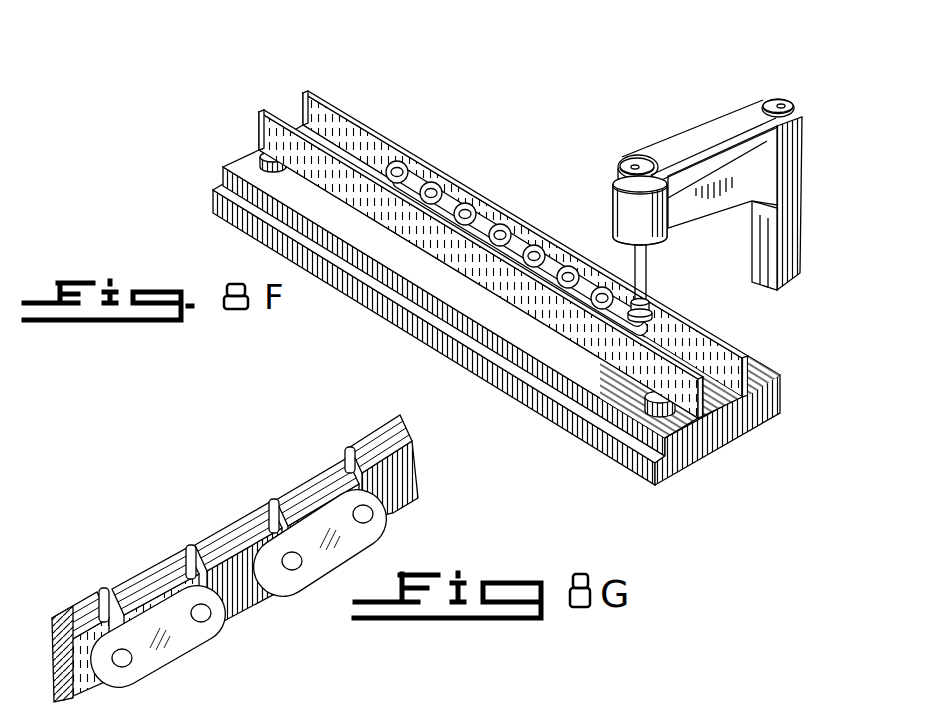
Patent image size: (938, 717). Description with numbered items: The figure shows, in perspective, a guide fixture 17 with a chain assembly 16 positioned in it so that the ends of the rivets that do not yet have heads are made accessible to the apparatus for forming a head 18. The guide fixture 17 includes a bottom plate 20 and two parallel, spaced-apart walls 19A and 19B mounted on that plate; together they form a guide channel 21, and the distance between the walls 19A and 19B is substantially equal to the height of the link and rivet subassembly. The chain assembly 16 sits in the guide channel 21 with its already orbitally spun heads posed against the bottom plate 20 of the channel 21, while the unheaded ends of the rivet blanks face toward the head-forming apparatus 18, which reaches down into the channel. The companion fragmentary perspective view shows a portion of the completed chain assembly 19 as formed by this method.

In FIG. 8F, the chain assembly 16 is at (483, 227).
In FIG. 8F, the guide fixture 17 is at (760, 338).
In FIG. 8F, the apparatus for forming a head 18 is at (620, 133).
In FIG. 8G, the completed chain assembly 19 is at (236, 469).
In FIG. 8F, the wall 19A is at (674, 309).
In FIG. 8F, the wall 19B is at (682, 392).
In FIG. 8F, the bottom plate 20 is at (577, 362).
In FIG. 8F, the guide channel 21 is at (746, 396).